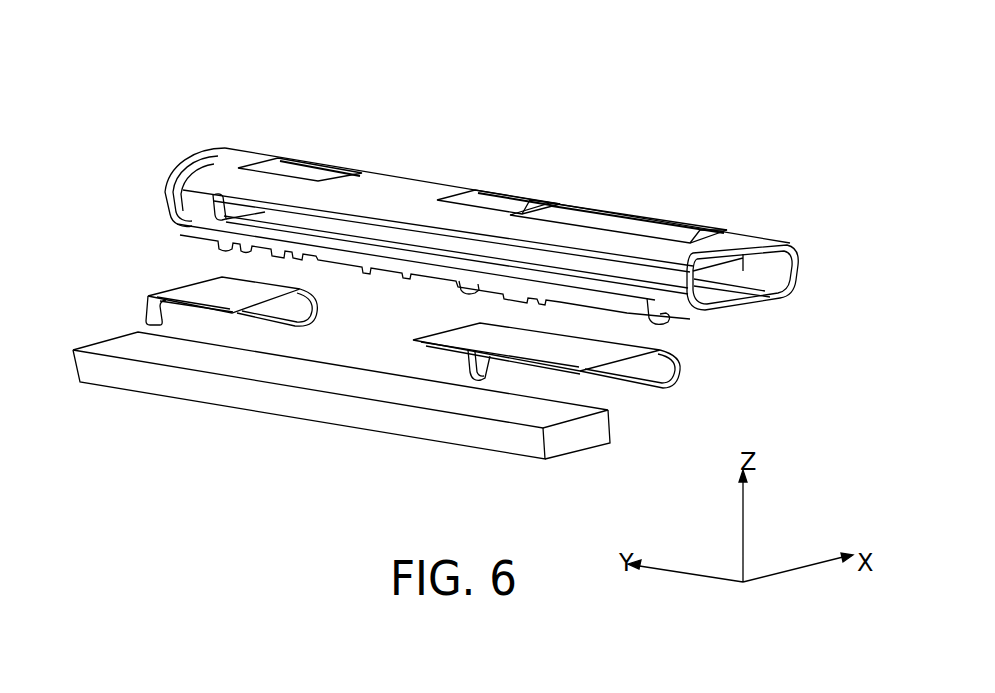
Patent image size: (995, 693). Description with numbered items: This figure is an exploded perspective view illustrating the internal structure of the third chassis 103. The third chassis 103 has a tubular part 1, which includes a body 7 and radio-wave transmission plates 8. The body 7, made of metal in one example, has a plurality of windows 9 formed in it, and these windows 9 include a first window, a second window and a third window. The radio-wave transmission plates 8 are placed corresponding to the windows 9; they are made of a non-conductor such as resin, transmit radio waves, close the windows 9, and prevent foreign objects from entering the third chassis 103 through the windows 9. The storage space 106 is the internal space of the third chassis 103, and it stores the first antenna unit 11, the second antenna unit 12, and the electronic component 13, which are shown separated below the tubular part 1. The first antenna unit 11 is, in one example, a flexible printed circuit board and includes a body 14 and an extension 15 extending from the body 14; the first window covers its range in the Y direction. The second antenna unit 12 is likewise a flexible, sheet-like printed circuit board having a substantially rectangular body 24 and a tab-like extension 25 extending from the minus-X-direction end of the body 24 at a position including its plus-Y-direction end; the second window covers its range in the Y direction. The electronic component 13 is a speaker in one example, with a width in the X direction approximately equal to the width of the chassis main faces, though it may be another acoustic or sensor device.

The tubular part 1 is at (418, 168).
The body 7 is at (231, 167).
The radio-wave transmission plate 8 is at (294, 165).
The window 9 is at (330, 167).
The first antenna unit 11 is at (678, 360).
The second antenna unit 12 is at (204, 283).
The electronic component 13 is at (318, 404).
The body 14 is at (478, 332).
The extension 15 is at (481, 371).
The body 24 is at (254, 288).
The extension 25 is at (147, 315).
The third chassis 103 is at (664, 130).
The storage space 106 is at (774, 263).